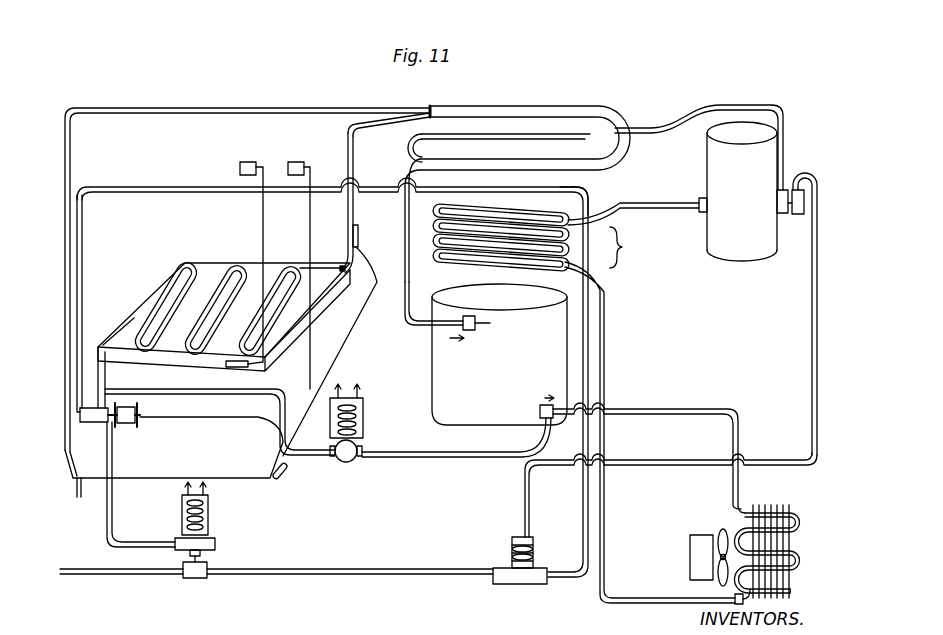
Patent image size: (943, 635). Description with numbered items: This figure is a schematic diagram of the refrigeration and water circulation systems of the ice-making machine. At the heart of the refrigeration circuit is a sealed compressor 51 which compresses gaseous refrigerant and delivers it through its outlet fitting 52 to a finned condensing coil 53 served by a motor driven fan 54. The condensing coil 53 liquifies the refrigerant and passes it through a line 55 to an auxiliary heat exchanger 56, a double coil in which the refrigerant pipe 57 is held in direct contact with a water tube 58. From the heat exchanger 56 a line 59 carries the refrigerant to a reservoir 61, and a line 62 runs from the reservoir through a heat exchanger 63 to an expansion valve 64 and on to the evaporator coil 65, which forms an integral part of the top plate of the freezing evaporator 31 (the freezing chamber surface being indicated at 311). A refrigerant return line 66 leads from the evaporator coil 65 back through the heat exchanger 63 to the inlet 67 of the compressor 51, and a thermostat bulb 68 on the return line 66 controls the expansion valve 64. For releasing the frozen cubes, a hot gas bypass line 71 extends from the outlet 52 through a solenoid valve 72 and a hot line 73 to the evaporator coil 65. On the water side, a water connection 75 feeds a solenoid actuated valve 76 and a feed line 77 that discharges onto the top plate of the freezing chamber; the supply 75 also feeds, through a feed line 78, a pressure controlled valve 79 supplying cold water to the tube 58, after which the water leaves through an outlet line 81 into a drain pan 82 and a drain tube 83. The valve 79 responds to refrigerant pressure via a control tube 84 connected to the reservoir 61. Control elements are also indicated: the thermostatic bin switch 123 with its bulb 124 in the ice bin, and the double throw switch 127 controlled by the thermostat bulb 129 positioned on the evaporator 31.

The freezing evaporator 31 is at (214, 265).
The panel surface 311 is at (270, 270).
The sealed compressor 51 is at (509, 376).
The outlet fitting 52 is at (540, 409).
The finned condensing coil 53 is at (800, 512).
The motor driven fan 54 is at (718, 535).
The line 55 is at (604, 535).
The auxiliary heat exchanger 56 is at (630, 247).
The refrigerant pipe 57 is at (582, 222).
The water tube 58 is at (590, 196).
The line 59 is at (664, 201).
The reservoir 61 is at (752, 212).
The line 62 is at (712, 115).
The heat exchanger 63 is at (557, 118).
The expansion valve 64 is at (96, 422).
The evaporator coil 65 is at (170, 275).
The refrigerant return line 66 is at (354, 158).
The compressor inlet 67 is at (476, 325).
The thermostat bulb 68 is at (358, 236).
The hot gas bypass line 71 is at (433, 458).
The solenoid valve 72 is at (351, 462).
The hot line 73 is at (175, 395).
The water connection 75 is at (114, 575).
The solenoid actuated valve 76 is at (215, 544).
The feed line 77 is at (106, 528).
The feed line 78 is at (360, 575).
The pressure controlled valve 79 is at (510, 556).
The outlet line 81 is at (158, 186).
The drain pan 82 is at (143, 478).
The drain tube 83 is at (76, 488).
The control tube 84 is at (811, 300).
The thermostatic bin switch 123 is at (296, 161).
The bulb 124 is at (285, 485).
The single pole double throw switch 127 is at (246, 161).
The thermostat bulb 129 is at (236, 368).